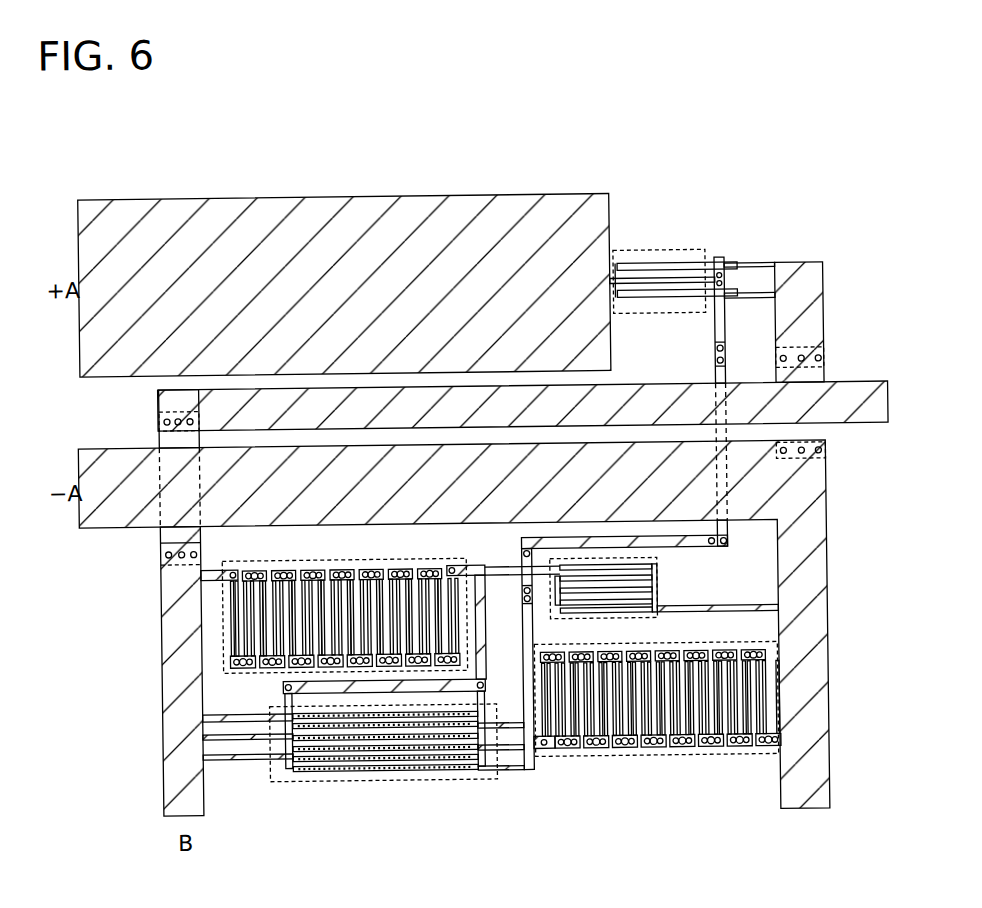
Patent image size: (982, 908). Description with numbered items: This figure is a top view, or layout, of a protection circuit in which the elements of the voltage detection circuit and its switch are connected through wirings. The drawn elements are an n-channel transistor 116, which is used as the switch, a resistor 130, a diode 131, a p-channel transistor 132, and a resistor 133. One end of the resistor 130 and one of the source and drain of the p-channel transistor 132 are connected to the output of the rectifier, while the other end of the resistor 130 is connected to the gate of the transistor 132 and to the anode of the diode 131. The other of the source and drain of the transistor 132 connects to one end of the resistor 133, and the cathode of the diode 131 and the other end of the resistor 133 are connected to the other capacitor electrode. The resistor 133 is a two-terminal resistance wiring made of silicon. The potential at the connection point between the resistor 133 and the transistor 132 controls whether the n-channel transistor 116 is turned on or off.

The n-channel transistor 116 is at (627, 250).
The resistor 130 is at (322, 558).
The diode 131 is at (658, 600).
The p-channel transistor 132 is at (390, 778).
The resistor 133 is at (654, 757).